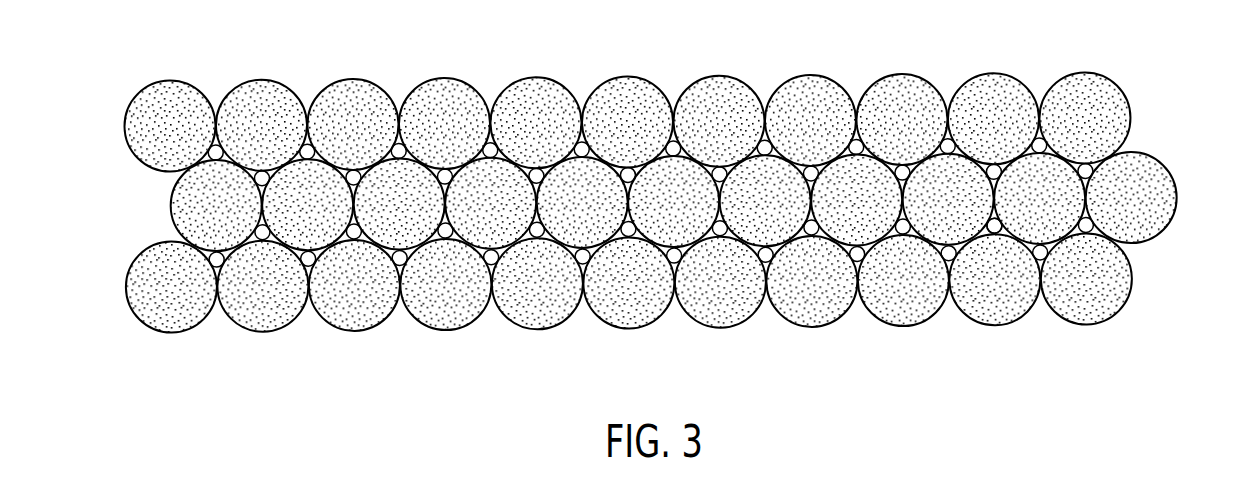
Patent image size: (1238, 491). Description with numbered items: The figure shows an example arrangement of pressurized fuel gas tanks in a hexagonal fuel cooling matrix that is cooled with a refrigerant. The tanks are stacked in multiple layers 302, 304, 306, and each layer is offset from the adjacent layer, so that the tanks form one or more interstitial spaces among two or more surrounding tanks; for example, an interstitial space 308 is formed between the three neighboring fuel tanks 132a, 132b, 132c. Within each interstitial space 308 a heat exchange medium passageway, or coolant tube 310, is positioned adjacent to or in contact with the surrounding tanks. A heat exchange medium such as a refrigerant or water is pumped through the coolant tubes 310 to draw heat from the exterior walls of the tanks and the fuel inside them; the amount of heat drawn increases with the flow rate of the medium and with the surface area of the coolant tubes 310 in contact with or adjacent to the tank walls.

The layer 302 is at (100, 158).
The layer 304 is at (100, 245).
The layer 306 is at (100, 329).
The fuel tank 132a is at (987, 315).
The fuel tank 132b is at (1062, 202).
The fuel tank 132c is at (945, 197).
The interstitial space 308 is at (997, 230).
The coolant tube 310 is at (992, 226).